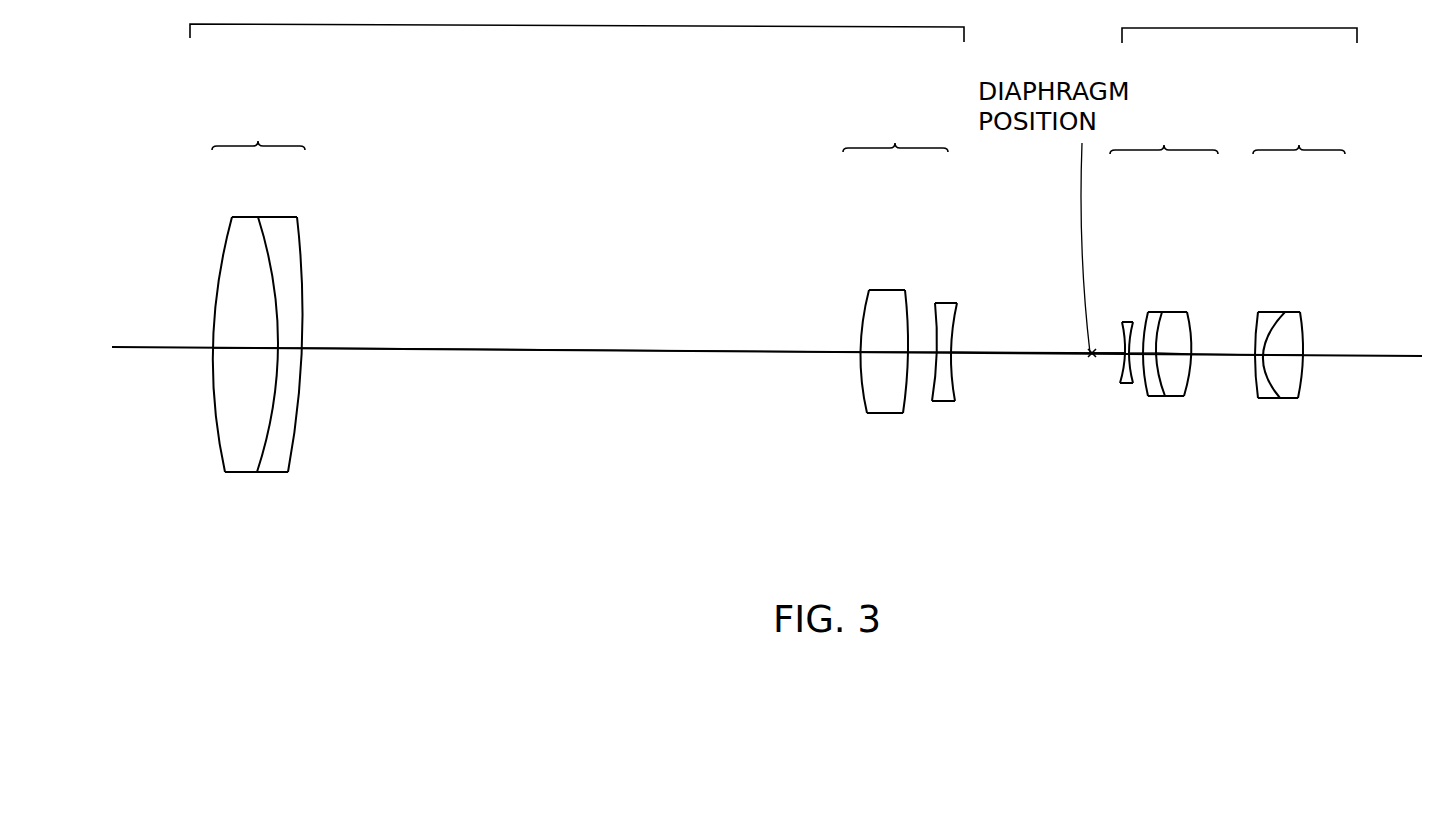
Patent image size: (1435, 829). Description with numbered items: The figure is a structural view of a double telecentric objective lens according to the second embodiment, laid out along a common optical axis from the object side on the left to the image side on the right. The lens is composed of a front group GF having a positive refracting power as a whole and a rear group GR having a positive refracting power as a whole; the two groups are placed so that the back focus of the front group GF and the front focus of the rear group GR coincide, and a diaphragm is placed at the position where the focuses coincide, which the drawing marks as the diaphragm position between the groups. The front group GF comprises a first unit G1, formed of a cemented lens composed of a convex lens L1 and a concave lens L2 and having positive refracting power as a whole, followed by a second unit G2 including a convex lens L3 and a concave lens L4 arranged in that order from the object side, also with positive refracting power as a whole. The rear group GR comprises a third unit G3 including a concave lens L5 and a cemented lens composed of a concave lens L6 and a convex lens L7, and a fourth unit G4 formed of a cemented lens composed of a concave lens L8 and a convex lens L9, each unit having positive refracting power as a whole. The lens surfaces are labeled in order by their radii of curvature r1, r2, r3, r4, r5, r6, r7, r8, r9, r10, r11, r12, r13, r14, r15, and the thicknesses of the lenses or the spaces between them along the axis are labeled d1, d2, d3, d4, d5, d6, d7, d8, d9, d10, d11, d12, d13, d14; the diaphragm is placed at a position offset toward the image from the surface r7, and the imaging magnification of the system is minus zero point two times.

The front group GF is at (577, 21).
The rear group GR is at (1239, 21).
The first unit G1 is at (258, 128).
The second unit G2 is at (895, 131).
The third unit G3 is at (1164, 132).
The fourth unit G4 is at (1299, 132).
The convex lens L1 is at (231, 356).
The concave lens L2 is at (289, 356).
The convex lens L3 is at (863, 324).
The concave lens L4 is at (966, 324).
The concave lens L5 is at (1100, 313).
The concave lens L6 is at (1165, 333).
The convex lens L7 is at (1210, 333).
The concave lens L8 is at (1293, 315).
The convex lens L9 is at (1334, 315).
The radius of curvature r1 is at (222, 462).
The radius of curvature r2 is at (257, 462).
The radius of curvature r3 is at (293, 462).
The radius of curvature r4 is at (862, 402).
The radius of curvature r5 is at (907, 404).
The radius of curvature r6 is at (930, 403).
The radius of curvature r7 is at (962, 403).
The radius of curvature r8 is at (1118, 380).
The radius of curvature r9 is at (1133, 380).
The radius of curvature r10 is at (1148, 396).
The radius of curvature r11 is at (1168, 396).
The radius of curvature r12 is at (1190, 396).
The radius of curvature r13 is at (1254, 398).
The radius of curvature r14 is at (1290, 398).
The radius of curvature r15 is at (1303, 398).
The lens thickness d1 is at (245, 338).
The lens thickness d2 is at (285, 347).
The lens spacing d3 is at (581, 338).
The lens thickness d4 is at (884, 341).
The lens spacing d5 is at (922, 351).
The lens thickness d6 is at (947, 352).
The lens spacing d7 is at (1037, 341).
The lens thickness d8 is at (1122, 365).
The lens spacing d9 is at (1140, 352).
The lens thickness d10 is at (1165, 353).
The lens thickness d11 is at (1172, 356).
The lens spacing d12 is at (1265, 353).
The lens thickness d13 is at (1268, 355).
The lens thickness d14 is at (1270, 356).